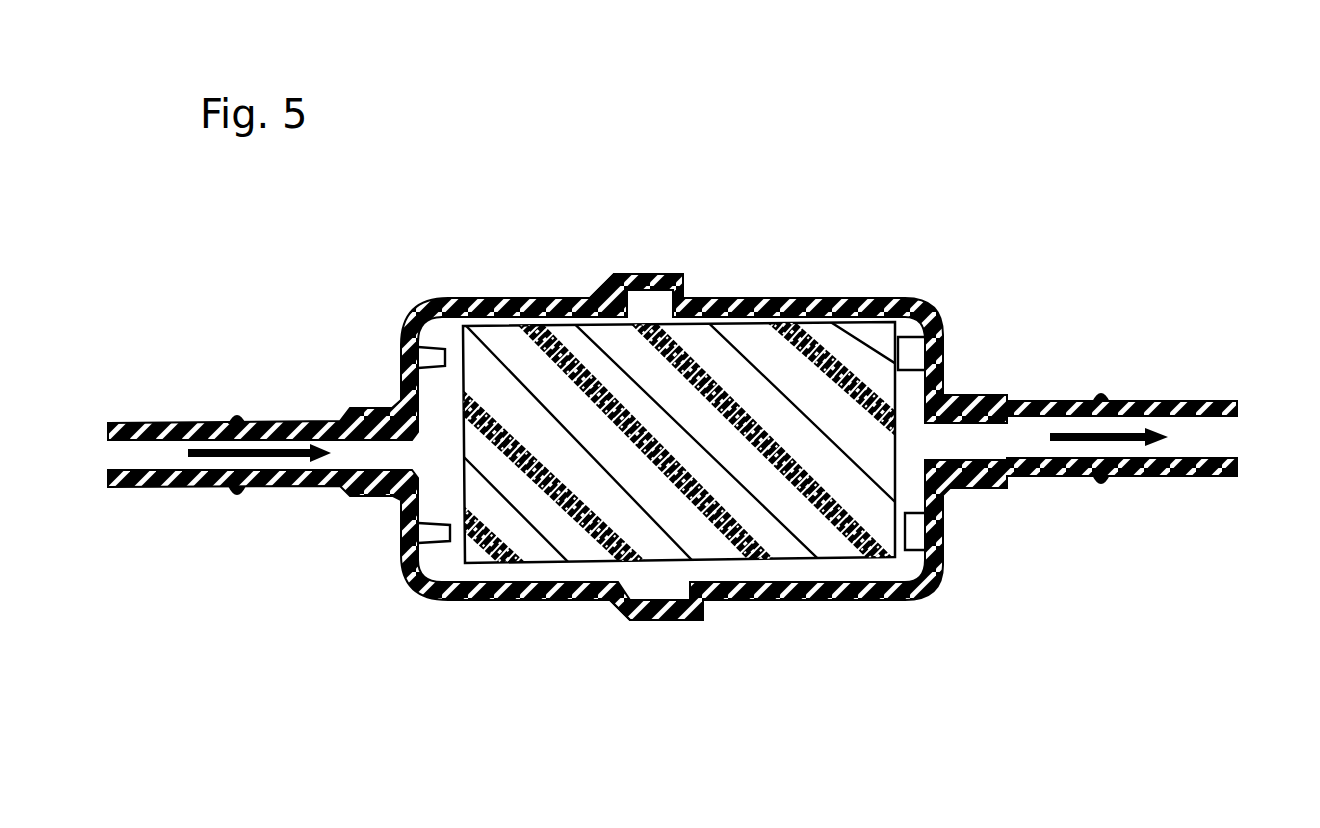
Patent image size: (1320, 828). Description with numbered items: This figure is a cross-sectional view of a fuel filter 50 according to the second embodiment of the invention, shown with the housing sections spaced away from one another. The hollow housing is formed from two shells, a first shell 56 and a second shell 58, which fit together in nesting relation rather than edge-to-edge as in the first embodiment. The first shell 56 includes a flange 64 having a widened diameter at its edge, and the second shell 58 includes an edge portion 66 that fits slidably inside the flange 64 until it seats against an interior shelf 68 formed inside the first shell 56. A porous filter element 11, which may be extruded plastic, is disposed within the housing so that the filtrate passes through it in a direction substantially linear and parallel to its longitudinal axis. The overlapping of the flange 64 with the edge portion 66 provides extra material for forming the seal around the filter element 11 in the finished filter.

The fuel filter 50 is at (706, 383).
The first shell 56 is at (527, 293).
The second shell 58 is at (820, 293).
The flange 64 is at (653, 267).
The edge portion 66 is at (697, 295).
The interior shelf 68 is at (673, 605).
The filter element 11 is at (455, 467).